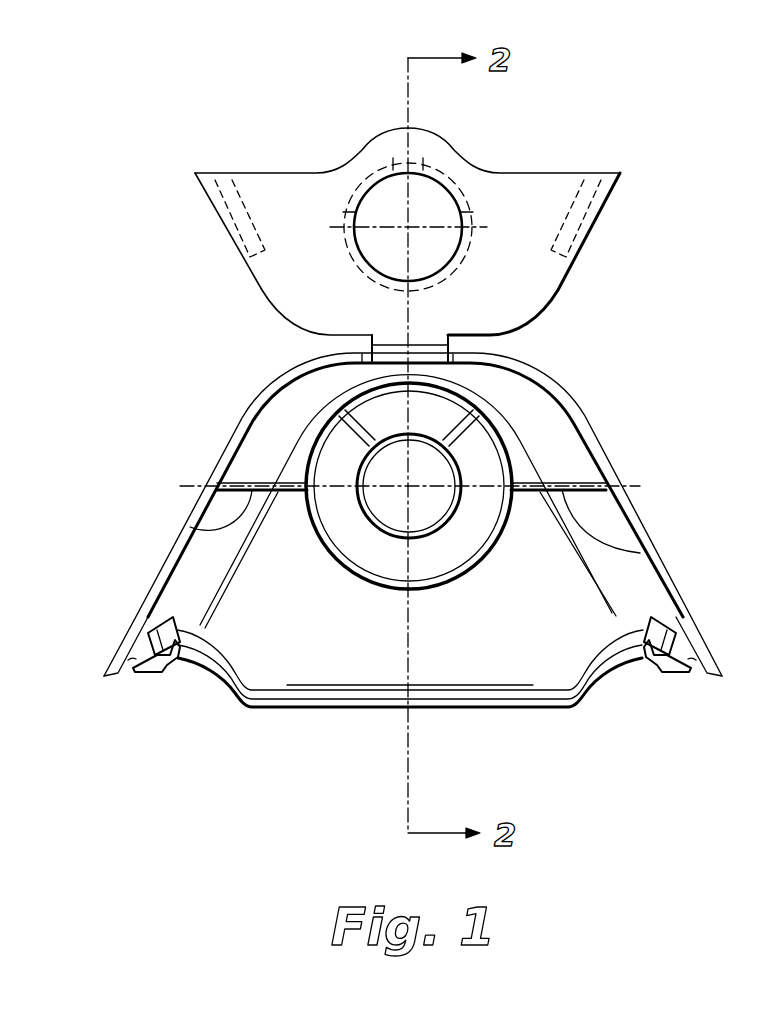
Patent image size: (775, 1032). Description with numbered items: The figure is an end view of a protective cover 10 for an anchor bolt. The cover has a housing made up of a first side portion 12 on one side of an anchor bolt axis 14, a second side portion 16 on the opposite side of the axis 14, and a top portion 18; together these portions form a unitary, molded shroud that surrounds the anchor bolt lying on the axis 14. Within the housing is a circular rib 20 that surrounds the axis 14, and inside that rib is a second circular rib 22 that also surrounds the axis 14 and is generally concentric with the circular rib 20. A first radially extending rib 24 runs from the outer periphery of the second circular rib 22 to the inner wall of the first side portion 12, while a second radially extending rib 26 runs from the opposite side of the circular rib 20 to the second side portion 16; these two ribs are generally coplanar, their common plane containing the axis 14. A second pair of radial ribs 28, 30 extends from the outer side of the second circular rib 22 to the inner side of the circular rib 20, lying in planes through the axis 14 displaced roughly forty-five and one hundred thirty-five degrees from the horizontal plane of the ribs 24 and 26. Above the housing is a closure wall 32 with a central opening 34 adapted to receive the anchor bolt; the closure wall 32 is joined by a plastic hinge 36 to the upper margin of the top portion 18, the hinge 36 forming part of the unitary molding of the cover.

The protective cover 10 is at (600, 452).
The first side portion 12 is at (607, 476).
The anchor bolt axis 14 is at (408, 487).
The second side portion 16 is at (210, 473).
The top portion 18 is at (440, 356).
The circular rib 20 is at (447, 573).
The second circular rib 22 is at (355, 495).
The first radially extending rib 24 is at (633, 551).
The second radially extending rib 26 is at (197, 522).
The radial rib 28 is at (478, 440).
The radial rib 30 is at (362, 415).
The closure wall 32 is at (560, 107).
The central opening 34 is at (383, 203).
The hinge 36 is at (375, 345).